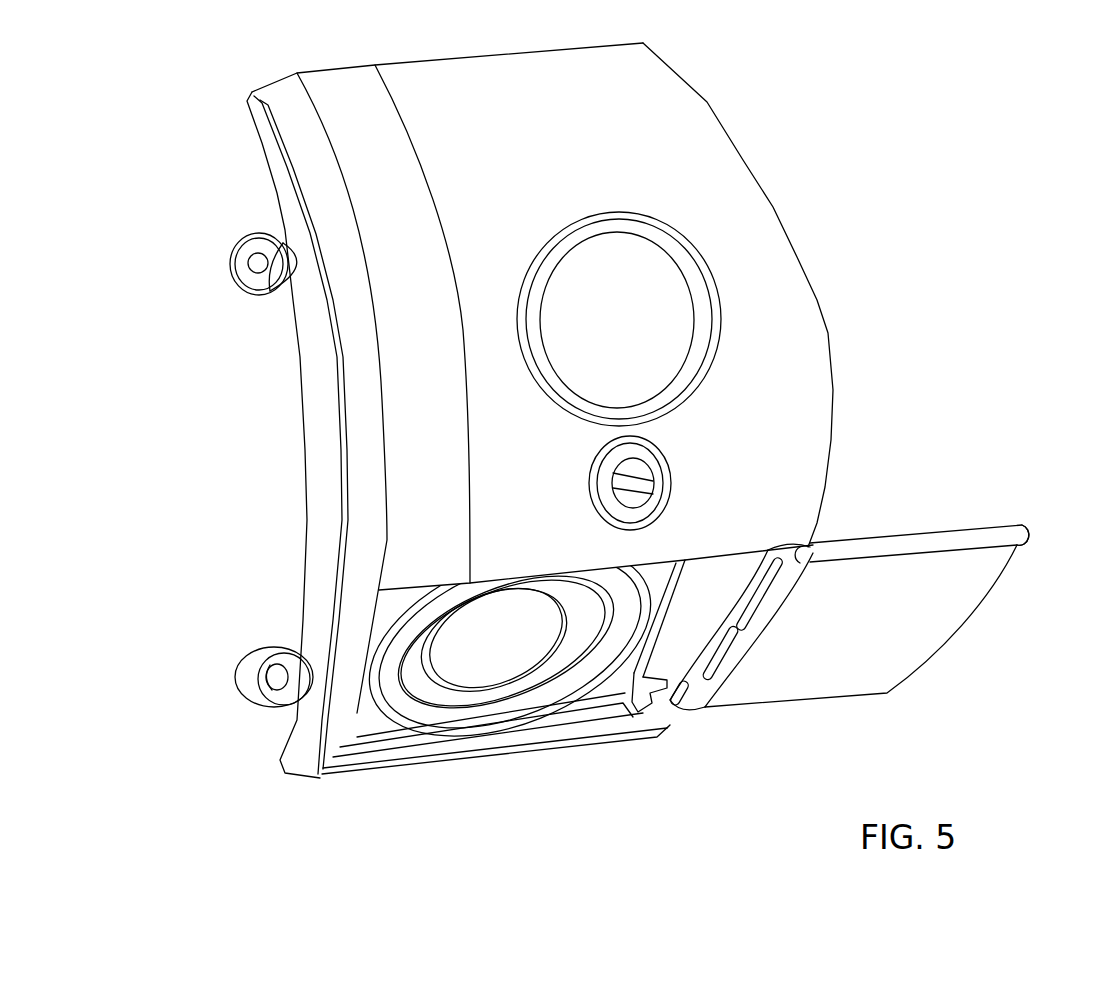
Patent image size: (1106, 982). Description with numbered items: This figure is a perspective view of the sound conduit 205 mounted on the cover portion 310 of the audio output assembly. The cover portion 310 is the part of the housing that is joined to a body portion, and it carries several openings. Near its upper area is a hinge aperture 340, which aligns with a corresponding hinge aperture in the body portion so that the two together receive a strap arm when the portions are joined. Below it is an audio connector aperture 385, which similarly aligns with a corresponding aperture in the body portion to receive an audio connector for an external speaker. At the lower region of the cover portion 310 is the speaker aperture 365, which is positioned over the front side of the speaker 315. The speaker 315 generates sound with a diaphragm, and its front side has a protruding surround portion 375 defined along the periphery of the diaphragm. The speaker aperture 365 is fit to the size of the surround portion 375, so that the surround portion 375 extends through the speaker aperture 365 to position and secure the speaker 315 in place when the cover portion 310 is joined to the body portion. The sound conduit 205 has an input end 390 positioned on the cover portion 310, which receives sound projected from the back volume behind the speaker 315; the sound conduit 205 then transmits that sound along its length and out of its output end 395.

The cover portion 310 is at (668, 132).
The hinge aperture 340 is at (693, 324).
The audio connector aperture 385 is at (605, 473).
The input end 390 is at (765, 568).
The output end 395 is at (965, 622).
The sound conduit 205 is at (813, 672).
The speaker aperture 365 is at (400, 600).
The speaker 315 is at (353, 735).
The surround portion 375 is at (490, 710).